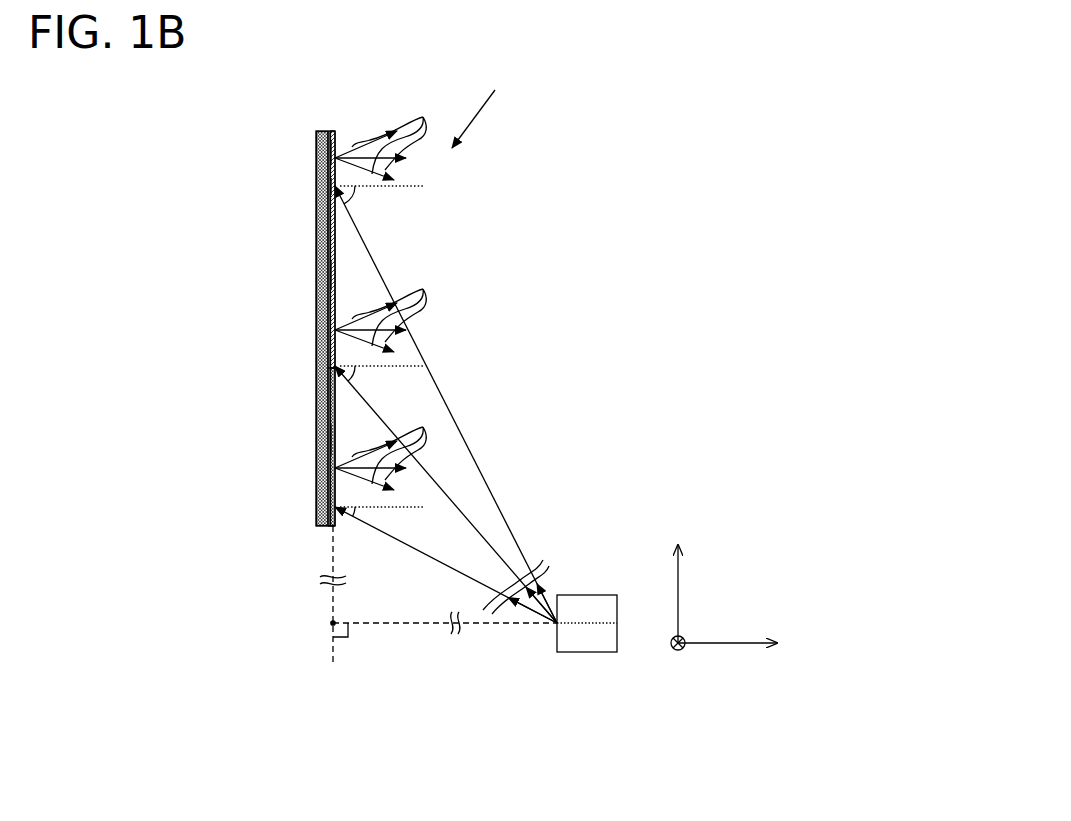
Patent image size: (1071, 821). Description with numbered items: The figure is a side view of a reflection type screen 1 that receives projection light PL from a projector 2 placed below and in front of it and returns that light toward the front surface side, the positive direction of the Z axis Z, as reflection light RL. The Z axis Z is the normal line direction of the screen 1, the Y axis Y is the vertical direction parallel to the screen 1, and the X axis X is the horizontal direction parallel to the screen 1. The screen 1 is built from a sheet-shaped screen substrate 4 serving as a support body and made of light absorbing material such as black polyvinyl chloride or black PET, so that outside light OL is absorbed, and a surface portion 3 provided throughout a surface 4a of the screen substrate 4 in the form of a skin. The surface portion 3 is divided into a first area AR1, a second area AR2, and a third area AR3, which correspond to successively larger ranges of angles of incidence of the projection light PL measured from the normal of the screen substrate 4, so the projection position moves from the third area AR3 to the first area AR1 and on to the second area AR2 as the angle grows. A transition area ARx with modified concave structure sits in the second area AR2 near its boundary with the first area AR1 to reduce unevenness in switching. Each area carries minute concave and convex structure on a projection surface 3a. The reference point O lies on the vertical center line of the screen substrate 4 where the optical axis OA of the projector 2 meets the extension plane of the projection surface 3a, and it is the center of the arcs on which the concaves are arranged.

The screen 1 is at (310, 131).
The projector 2 is at (582, 595).
The surface portion 3 is at (337, 250).
The surface (projection surface) 3a is at (337, 527).
The screen substrate 4 is at (317, 215).
The surface 4a is at (335, 140).
The first area AR1 is at (333, 272).
The second area AR2 is at (333, 146).
The third area AR3 is at (333, 440).
The transition area ARx is at (333, 187).
The reflection light RL is at (385, 289).
The projection light PL is at (472, 500).
The outside light OL is at (480, 110).
The optical axis OA is at (585, 624).
The reference point O is at (336, 620).
The X axis X is at (673, 655).
The Y axis Y is at (664, 589).
The Z axis Z is at (735, 659).